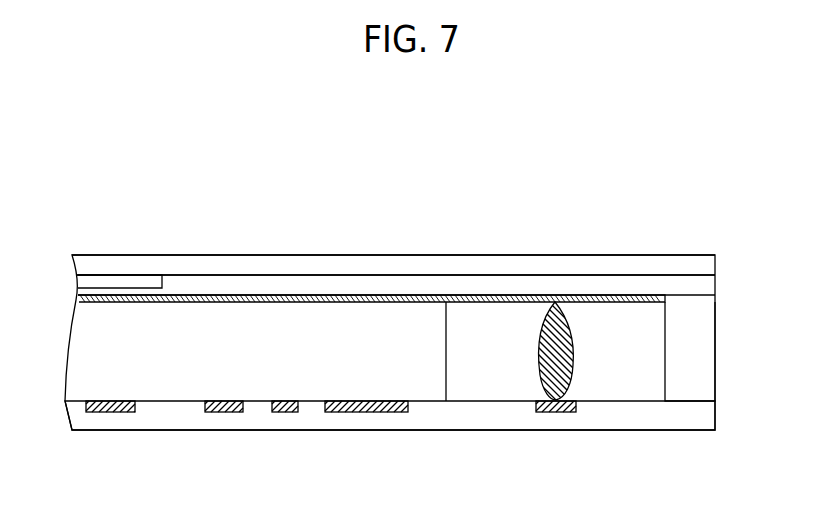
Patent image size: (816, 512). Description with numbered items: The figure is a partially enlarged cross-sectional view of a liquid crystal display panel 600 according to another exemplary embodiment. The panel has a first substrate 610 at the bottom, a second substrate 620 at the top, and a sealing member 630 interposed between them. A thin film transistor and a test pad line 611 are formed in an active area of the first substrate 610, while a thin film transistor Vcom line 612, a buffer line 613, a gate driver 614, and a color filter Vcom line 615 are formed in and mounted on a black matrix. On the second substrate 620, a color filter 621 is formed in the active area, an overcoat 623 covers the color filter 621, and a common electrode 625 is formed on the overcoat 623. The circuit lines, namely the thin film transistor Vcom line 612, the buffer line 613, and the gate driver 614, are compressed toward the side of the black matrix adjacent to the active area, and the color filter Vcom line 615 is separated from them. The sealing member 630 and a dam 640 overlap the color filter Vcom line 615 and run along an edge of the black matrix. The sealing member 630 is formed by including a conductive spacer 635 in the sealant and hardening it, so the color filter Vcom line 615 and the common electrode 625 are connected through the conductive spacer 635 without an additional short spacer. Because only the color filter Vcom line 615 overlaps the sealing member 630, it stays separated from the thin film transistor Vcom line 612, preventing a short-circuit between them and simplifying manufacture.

The liquid crystal display panel 600 is at (408, 155).
The first substrate 610 is at (670, 418).
The test pad line 611 is at (110, 413).
The thin film transistor Vcom line 612 is at (223, 413).
The buffer line 613 is at (283, 413).
The gate driver 614 is at (360, 413).
The color filter Vcom line 615 is at (553, 405).
The second substrate 620 is at (485, 265).
The color filter 621 is at (124, 283).
The overcoat 623 is at (245, 285).
The common electrode 625 is at (368, 296).
The sealing member 630 is at (456, 352).
The conductive spacer 635 is at (565, 366).
The dam 640 is at (702, 350).